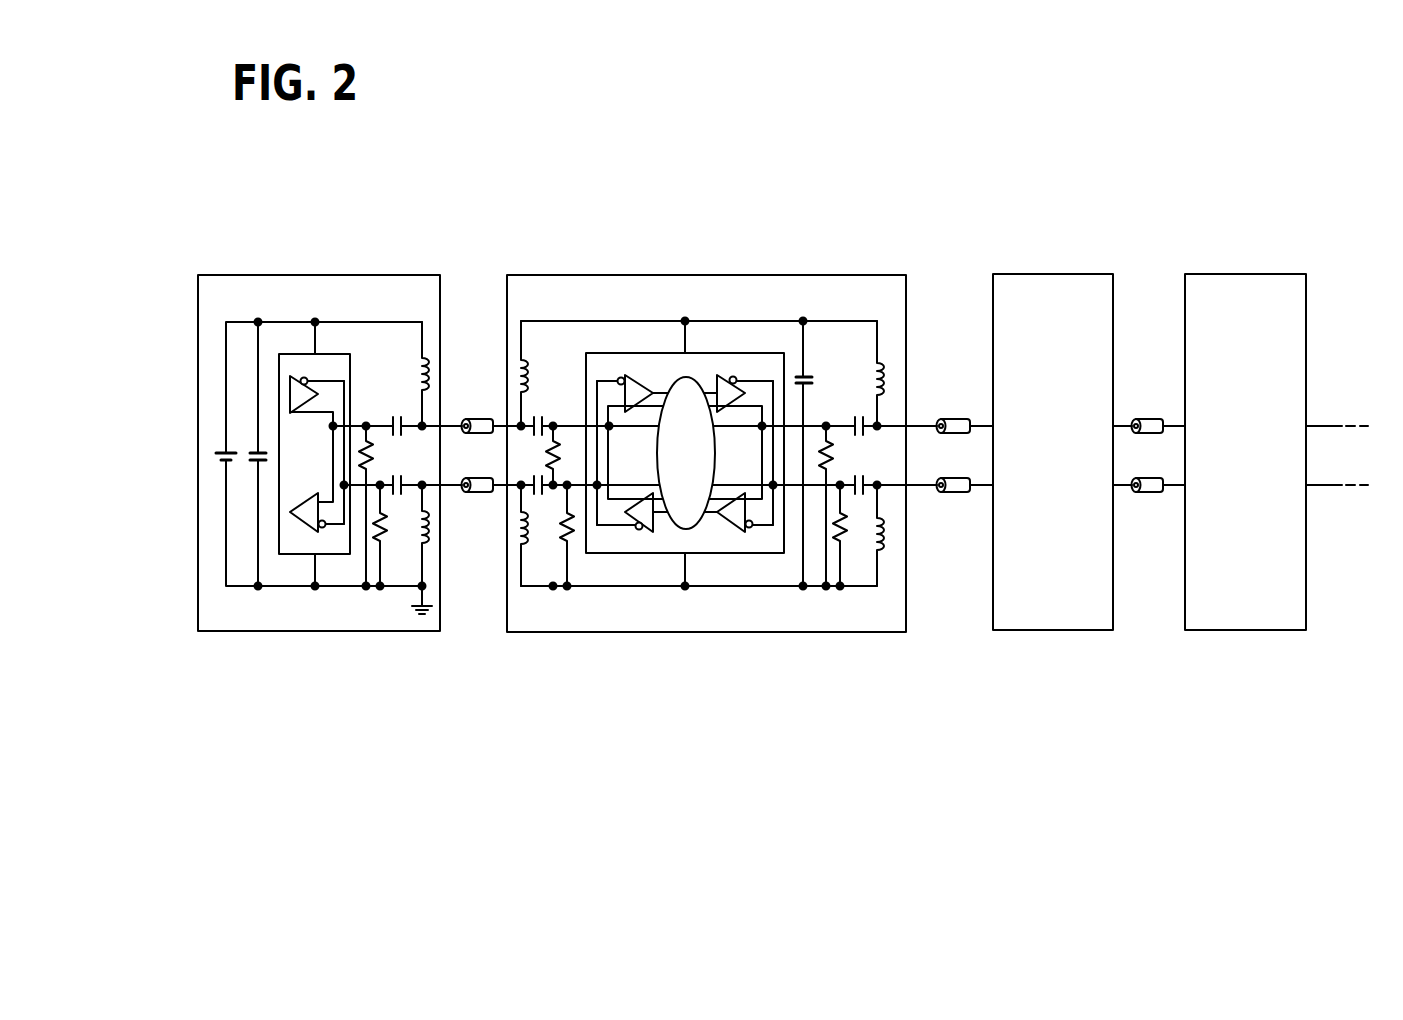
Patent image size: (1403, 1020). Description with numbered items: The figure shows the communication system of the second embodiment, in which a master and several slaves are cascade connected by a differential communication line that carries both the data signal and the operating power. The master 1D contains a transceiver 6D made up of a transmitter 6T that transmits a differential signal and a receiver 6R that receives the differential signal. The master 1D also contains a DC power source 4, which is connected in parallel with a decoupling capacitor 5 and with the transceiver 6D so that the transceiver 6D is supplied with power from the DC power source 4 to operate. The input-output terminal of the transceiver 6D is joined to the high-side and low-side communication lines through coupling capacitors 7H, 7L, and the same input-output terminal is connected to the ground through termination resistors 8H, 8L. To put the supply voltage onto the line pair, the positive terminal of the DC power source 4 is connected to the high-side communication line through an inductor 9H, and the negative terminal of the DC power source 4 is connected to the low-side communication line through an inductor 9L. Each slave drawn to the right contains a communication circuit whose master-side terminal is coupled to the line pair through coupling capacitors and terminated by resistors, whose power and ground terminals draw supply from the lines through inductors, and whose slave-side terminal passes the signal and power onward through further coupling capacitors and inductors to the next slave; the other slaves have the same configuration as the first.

The master 1D is at (325, 275).
The DC power source 4 is at (221, 447).
The decoupling capacitor 5 is at (254, 447).
The transceiver 6D is at (337, 354).
The transmitter 6T is at (300, 365).
The receiver 6R is at (303, 497).
The coupling capacitor 7H is at (395, 416).
The coupling capacitor 7L is at (403, 477).
The termination resistor 8H is at (373, 455).
The termination resistor 8L is at (385, 530).
The inductor 9H is at (416, 372).
The inductor 9L is at (416, 545).